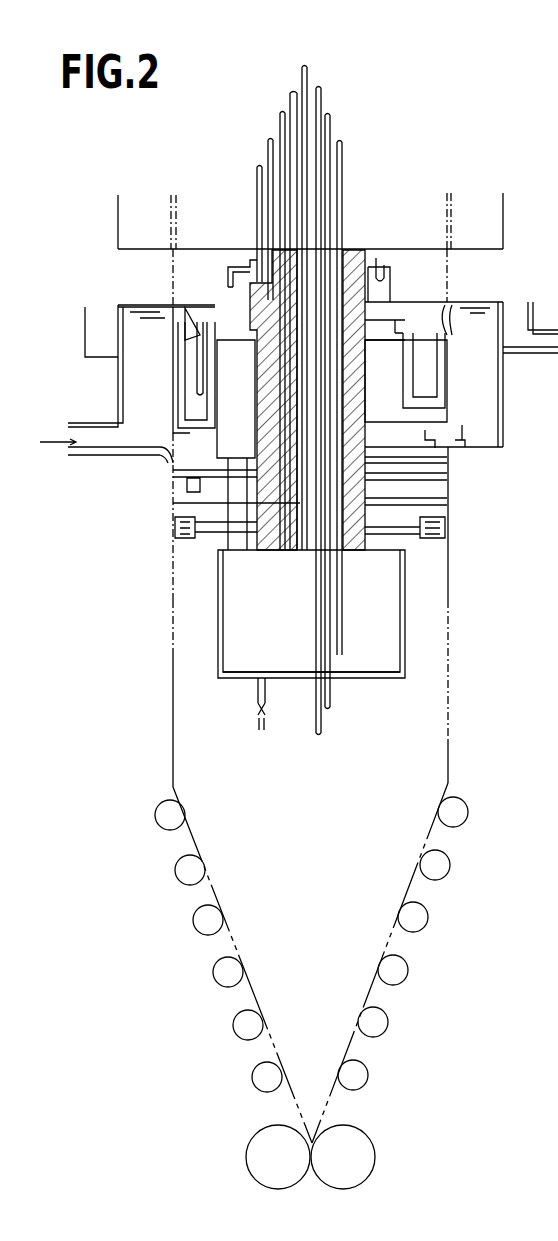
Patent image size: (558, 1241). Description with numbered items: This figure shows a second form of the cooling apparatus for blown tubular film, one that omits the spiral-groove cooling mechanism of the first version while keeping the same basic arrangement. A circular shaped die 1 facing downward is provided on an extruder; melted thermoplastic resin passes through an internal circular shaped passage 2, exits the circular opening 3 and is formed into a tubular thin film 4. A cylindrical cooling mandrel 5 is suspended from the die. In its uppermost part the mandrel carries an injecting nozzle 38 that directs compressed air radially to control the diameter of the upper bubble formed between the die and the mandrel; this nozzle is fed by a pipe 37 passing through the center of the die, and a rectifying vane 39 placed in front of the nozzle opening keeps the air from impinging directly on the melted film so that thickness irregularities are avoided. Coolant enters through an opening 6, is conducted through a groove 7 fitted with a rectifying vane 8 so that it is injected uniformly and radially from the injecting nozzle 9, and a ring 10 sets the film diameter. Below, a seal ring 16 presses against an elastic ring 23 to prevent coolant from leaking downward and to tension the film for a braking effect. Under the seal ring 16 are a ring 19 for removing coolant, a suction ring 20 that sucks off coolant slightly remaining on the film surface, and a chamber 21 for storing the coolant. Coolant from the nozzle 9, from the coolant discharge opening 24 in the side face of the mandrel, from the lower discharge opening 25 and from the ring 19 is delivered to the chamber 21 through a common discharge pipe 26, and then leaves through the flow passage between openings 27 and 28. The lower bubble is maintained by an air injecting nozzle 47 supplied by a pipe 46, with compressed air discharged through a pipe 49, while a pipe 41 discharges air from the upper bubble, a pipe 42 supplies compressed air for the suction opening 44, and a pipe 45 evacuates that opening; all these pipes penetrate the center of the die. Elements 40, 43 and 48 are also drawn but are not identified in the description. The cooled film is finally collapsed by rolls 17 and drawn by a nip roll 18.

The circular shaped die 1 is at (503, 205).
The internal circular shaped passage 2 is at (448, 193).
The circular opening 3 is at (443, 248).
The tubular thin film 4 is at (449, 268).
The cooling mandrel 5 is at (205, 305).
The opening for introducing the coolant 6 is at (280, 112).
The groove 7 is at (415, 405).
The rectifying vane 8 is at (503, 392).
The injecting nozzle 9 is at (505, 320).
The ring for setting the diameter 10 is at (452, 340).
The seal ring 16 is at (447, 462).
The rolls 17 is at (468, 812).
The nip roll 18 is at (372, 1130).
The ring for removing coolant 19 is at (450, 482).
The suction ring 20 is at (447, 525).
The chamber for storing the coolant 21 is at (388, 680).
The elastic ring 23 is at (462, 433).
The coolant discharge opening 24 is at (425, 430).
The lower opening for discharging the coolant 25 is at (175, 470).
The common discharge pipe 26 is at (378, 330).
The opening for discharging the coolant 27 is at (390, 660).
The opening for discharging the coolant 28 is at (343, 140).
The pipe for introducing compressed air for the upper bubble 37 is at (268, 140).
The injecting nozzle for compressed air 38 is at (390, 275).
The rectifying vane 39 is at (228, 280).
The fitting 40 is at (378, 258).
The pipe for discharging compressed air from the upper bubble 41 is at (258, 167).
The pipe for introducing compressed air for the suction opening 42 is at (290, 92).
The seal 43 is at (408, 498).
The suction opening 44 is at (412, 530).
The pipe for evacuating the suction opening 45 is at (303, 66).
The pipe for introducing compressed air for the lower bubble 46 is at (321, 88).
The air injecting nozzle for the lower bubble 47 is at (320, 735).
The tube outlet 48 is at (330, 710).
The pipe for discharging compressed air from the lower bubble 49 is at (332, 113).